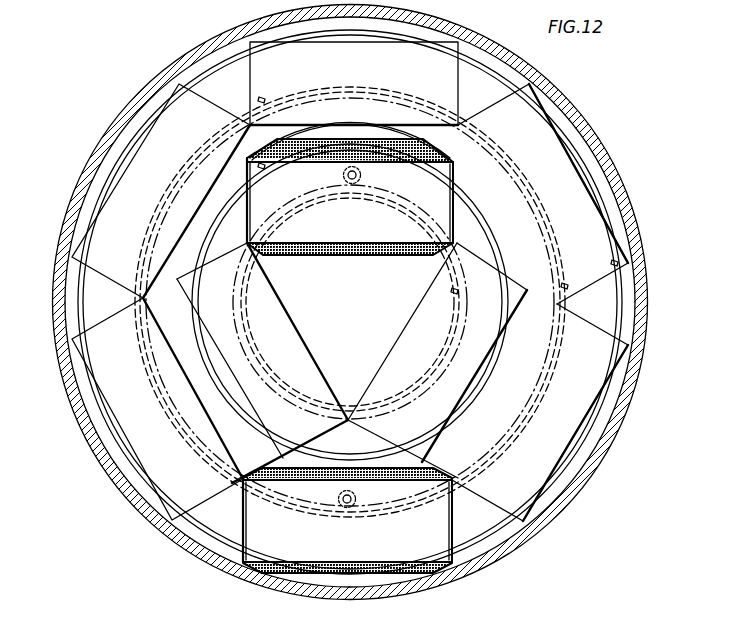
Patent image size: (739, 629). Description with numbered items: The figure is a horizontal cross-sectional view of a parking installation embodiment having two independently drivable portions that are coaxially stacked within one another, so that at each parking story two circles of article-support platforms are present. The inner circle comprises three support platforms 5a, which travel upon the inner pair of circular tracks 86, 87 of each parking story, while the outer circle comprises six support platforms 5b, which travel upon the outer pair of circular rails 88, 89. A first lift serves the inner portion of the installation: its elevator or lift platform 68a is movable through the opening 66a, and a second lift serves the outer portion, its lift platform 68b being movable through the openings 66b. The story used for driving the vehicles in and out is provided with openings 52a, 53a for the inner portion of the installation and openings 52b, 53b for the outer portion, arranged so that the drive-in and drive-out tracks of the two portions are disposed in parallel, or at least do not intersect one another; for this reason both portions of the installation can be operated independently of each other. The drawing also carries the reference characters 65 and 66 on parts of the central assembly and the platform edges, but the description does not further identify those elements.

The support platform 5a is at (385, 293).
The support platform 5b is at (250, 70).
The opening 52a is at (90, 157).
The opening 52b is at (117, 477).
The opening 53a is at (617, 172).
The opening 53b is at (582, 484).
The cutting edge 65 is at (263, 50).
The side plate 66 is at (337, 257).
The opening 66a is at (243, 200).
The openings 66b is at (240, 531).
The lift platform 68a is at (419, 147).
The lift platform 68b is at (377, 475).
The circular track 86 is at (243, 290).
The circular track 87 is at (195, 332).
The circular rail 88 is at (148, 372).
The circular rail 89 is at (118, 433).